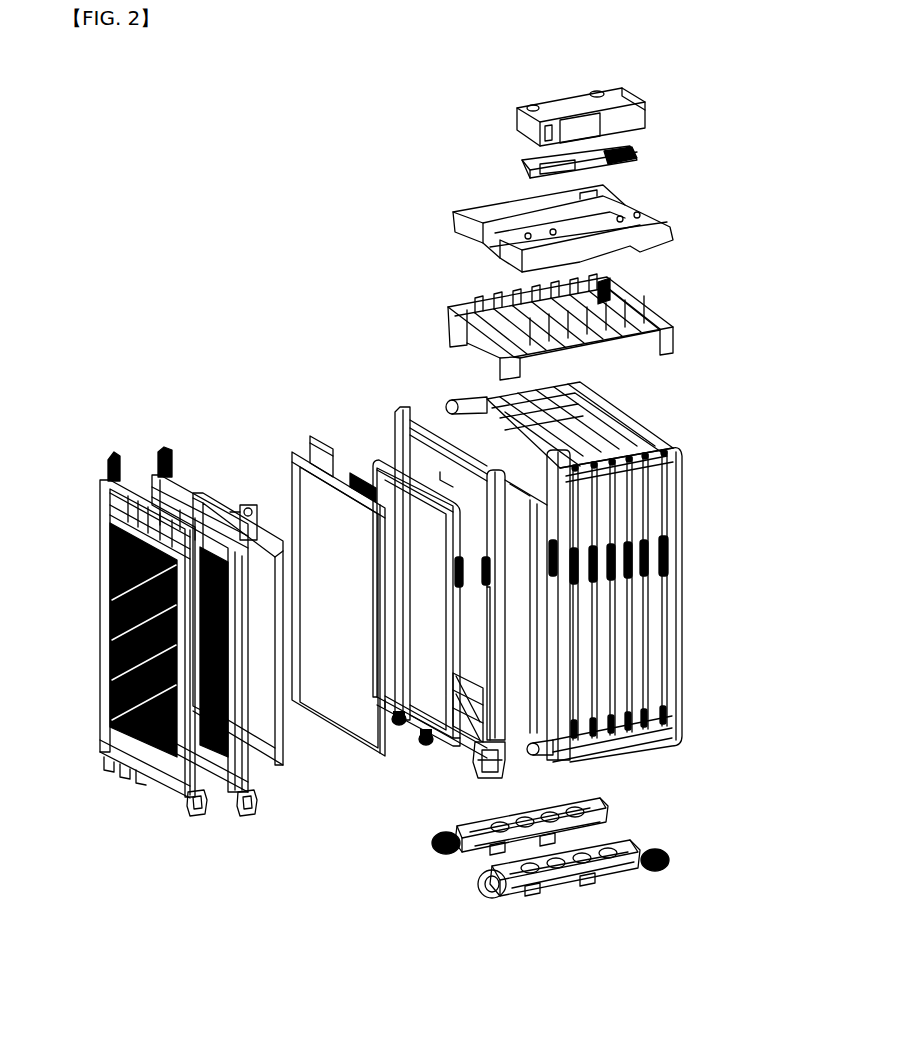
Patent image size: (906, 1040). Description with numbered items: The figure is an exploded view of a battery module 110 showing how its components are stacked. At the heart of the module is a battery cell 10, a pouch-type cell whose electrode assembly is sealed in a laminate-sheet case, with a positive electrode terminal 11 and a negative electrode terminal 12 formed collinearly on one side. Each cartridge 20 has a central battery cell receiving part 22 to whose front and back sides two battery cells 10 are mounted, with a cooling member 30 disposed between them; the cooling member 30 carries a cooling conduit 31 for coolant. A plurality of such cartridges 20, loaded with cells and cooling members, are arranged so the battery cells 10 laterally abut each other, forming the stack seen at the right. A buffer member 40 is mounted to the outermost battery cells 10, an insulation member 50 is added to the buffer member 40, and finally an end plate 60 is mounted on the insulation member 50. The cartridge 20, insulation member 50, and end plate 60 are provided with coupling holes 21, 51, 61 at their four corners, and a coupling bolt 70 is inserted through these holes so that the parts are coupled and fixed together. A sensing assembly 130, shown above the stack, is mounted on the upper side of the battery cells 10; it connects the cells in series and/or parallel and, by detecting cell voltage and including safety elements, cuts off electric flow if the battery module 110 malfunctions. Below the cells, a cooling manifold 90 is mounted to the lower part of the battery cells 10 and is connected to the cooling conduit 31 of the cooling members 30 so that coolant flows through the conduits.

The battery module 110 is at (132, 145).
The sensing assembly 130 is at (682, 272).
The battery cell 10 is at (294, 505).
The positive electrode terminal 11 is at (308, 446).
The negative electrode terminal 12 is at (352, 476).
The cartridge 20 is at (408, 406).
The coupling hole 21 is at (480, 772).
The battery cell receiving part 22 is at (470, 657).
The cooling member 30 is at (375, 460).
The cooling conduit 31 is at (420, 742).
The buffer member 40 is at (191, 500).
The insulation member 50 is at (150, 478).
The coupling hole 51 is at (242, 808).
The end plate 60 is at (96, 490).
The coupling hole 61 is at (188, 808).
The coupling bolt 70 is at (536, 755).
The cooling manifold 90 is at (640, 848).